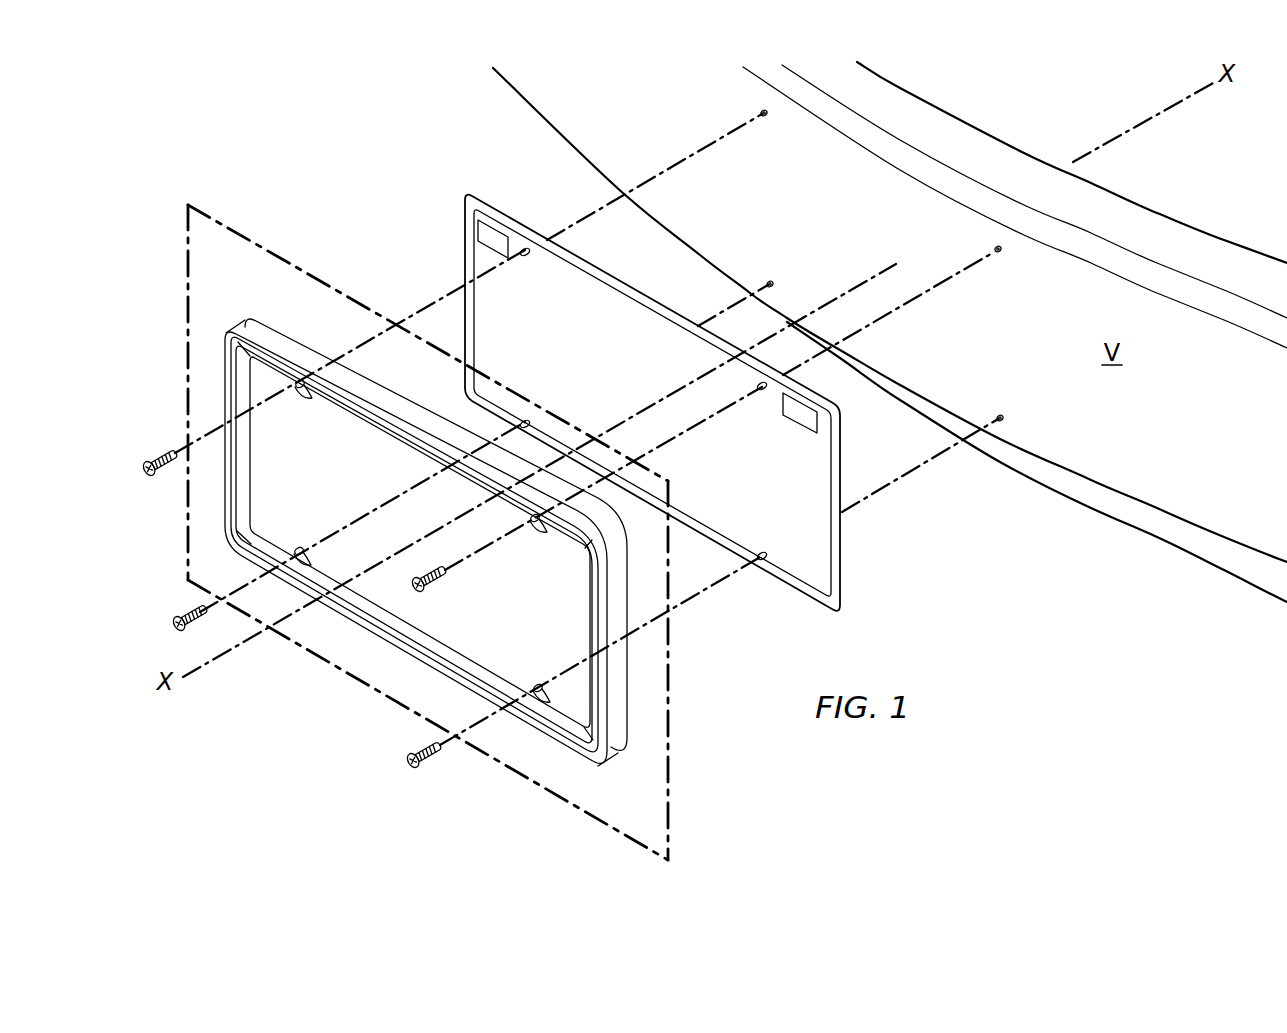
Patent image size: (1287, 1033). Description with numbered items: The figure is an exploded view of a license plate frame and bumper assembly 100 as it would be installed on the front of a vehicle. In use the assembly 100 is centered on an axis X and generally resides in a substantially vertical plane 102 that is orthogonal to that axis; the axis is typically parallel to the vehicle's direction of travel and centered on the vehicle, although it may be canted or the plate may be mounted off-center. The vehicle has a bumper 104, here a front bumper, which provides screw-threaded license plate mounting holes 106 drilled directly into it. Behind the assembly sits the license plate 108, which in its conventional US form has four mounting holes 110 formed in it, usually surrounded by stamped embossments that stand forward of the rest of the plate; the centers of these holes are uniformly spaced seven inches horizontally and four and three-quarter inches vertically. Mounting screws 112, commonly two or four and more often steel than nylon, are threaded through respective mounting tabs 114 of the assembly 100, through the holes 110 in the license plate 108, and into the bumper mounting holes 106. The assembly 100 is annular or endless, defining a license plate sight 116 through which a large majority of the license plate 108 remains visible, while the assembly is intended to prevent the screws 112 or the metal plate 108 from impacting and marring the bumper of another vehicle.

The license plate frame and bumper assembly 100 is at (242, 293).
The substantially vertical plane 102 is at (659, 725).
The bumper 104 is at (908, 212).
The license plate mounting holes 106 is at (765, 118).
The license plate 108 is at (845, 546).
The mounting holes 110 is at (526, 257).
The mounting screws 112 is at (147, 459).
The mounting tabs 114 is at (300, 390).
The license plate sight 116 is at (394, 468).